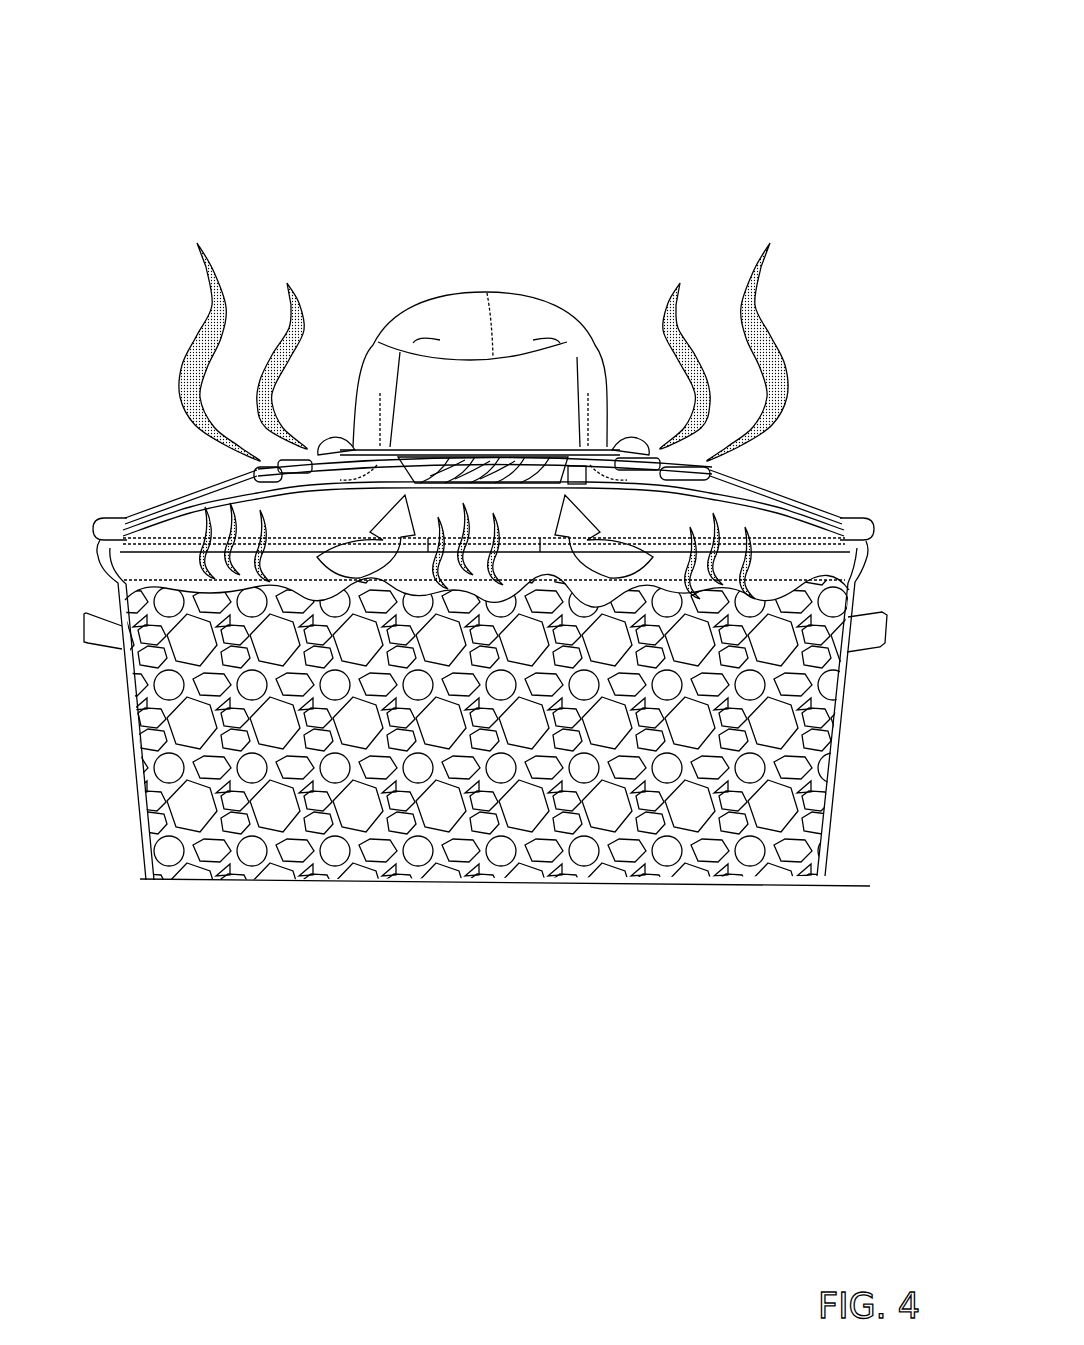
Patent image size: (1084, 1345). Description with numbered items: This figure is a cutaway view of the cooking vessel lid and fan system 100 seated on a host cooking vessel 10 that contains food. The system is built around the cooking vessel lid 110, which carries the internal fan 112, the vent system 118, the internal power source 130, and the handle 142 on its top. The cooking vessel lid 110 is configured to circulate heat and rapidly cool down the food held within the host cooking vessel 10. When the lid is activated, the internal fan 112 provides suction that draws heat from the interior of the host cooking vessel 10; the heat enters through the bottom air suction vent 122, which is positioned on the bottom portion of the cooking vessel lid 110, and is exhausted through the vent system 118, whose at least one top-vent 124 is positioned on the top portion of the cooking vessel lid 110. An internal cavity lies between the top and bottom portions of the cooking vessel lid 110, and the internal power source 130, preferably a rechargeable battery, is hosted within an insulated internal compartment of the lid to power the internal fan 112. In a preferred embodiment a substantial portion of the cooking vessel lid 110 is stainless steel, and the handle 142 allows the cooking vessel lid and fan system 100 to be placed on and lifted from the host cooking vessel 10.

The host cooking vessel 10 is at (140, 823).
The cooking vessel lid and fan system 100 is at (712, 75).
The cooking vessel lid 110 is at (712, 131).
The vent system 118 is at (712, 187).
The internal fan 112 is at (556, 452).
The internal power source 130 is at (588, 465).
The top-vent 124 is at (258, 470).
The handle 142 is at (505, 313).
The bottom air suction vent 122 is at (513, 548).